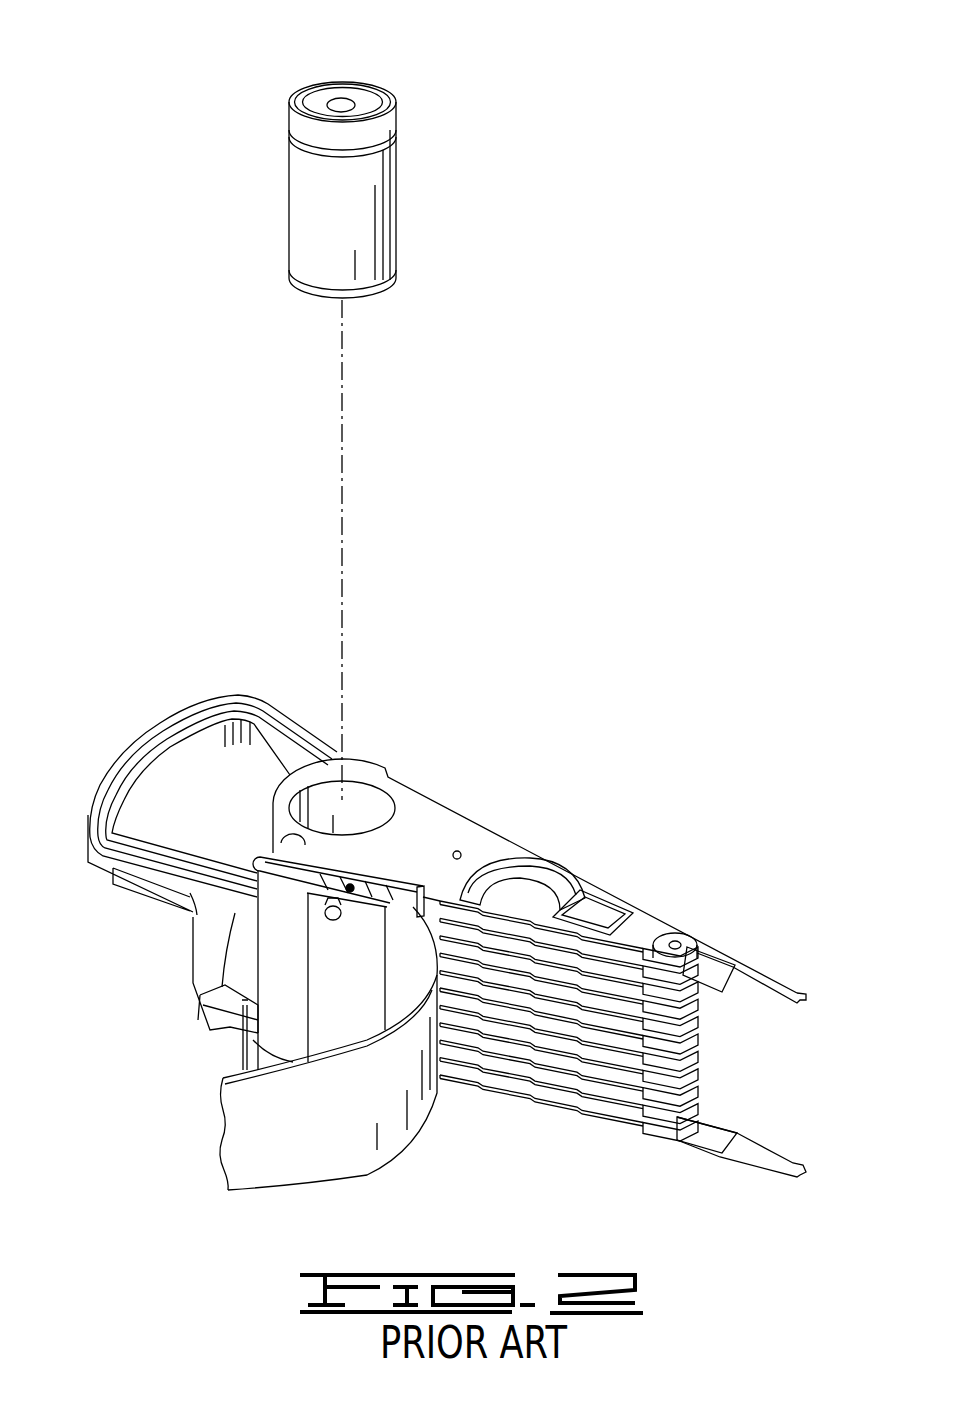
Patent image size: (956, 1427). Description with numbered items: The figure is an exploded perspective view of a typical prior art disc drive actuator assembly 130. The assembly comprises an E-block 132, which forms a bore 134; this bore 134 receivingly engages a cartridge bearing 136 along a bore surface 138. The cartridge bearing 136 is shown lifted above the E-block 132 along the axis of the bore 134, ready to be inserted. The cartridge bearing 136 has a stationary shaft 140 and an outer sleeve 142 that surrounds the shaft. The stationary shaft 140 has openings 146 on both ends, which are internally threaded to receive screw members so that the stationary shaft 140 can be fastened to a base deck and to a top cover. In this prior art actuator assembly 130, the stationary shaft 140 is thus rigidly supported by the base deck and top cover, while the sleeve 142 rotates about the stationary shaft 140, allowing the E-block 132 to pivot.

The actuator assembly 130 is at (447, 908).
The E-block 132 is at (483, 815).
The bore 134 is at (318, 793).
The cartridge bearing 136 is at (353, 157).
The bore surface 138 is at (370, 800).
The stationary shaft 140 is at (367, 100).
The outer sleeve 142 is at (300, 180).
The openings 146 is at (335, 102).